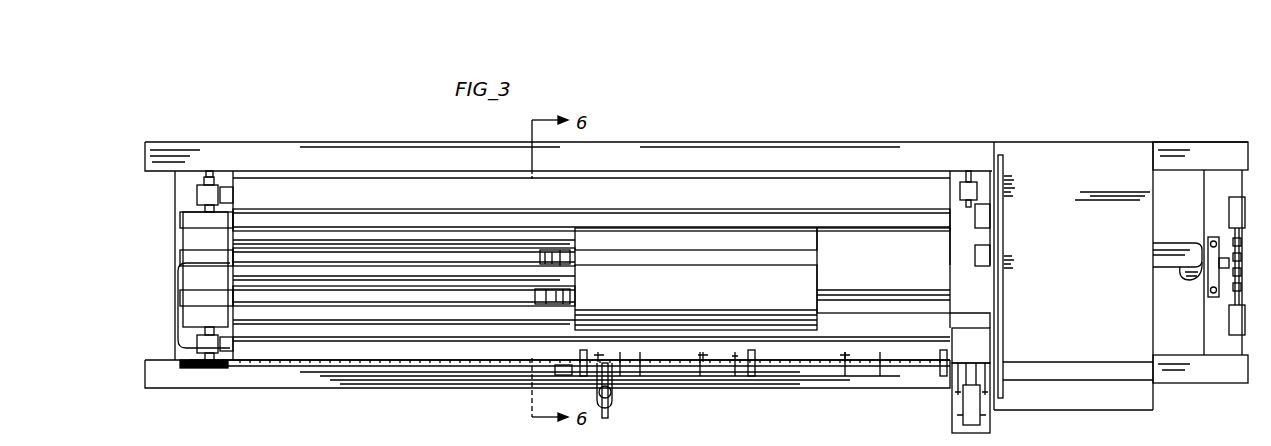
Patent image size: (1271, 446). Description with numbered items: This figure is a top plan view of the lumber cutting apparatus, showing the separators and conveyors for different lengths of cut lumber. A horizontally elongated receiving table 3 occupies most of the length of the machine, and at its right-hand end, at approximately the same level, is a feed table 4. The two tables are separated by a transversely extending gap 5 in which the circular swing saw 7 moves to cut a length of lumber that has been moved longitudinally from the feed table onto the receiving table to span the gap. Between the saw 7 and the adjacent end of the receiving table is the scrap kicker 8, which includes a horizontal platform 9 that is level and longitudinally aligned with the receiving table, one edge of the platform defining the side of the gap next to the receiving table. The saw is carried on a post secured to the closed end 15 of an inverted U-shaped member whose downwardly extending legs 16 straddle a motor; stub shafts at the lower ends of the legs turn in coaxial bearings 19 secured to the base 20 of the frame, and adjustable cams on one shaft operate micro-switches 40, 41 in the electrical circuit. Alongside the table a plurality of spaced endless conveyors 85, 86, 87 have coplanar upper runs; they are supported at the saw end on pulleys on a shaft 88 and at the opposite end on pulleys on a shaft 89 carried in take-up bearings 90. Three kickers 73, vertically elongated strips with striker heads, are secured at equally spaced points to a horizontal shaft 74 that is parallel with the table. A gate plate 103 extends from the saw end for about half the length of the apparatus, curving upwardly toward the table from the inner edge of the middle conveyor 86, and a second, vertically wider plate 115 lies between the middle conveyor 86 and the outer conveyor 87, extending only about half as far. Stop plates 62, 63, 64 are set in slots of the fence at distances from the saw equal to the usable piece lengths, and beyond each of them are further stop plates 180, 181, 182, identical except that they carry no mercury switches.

The receiving table 3 is at (450, 358).
The feed table 4 is at (1062, 258).
The gap 5 is at (1003, 315).
The circular swing saw 7 is at (1002, 155).
The scrap kicker 8 is at (940, 406).
The horizontal platform 9 is at (975, 346).
The closed end 15 is at (1184, 228).
The legs 16 is at (1190, 272).
The bearings 19 is at (1212, 280).
The base 20 is at (1185, 142).
The micro-switch 40 is at (1232, 318).
The micro-switch 41 is at (1232, 205).
The stop plate 62 is at (868, 362).
The stop plate 63 is at (735, 360).
The stop plate 64 is at (640, 362).
The kicker 73 is at (583, 357).
The horizontal shaft 74 is at (823, 362).
The endless conveyor 85 is at (190, 300).
The middle conveyor 86 is at (190, 258).
The outer conveyor 87 is at (190, 220).
The shaft 88 is at (968, 181).
The shaft 89 is at (210, 185).
The take-up bearings 90 is at (200, 197).
The gate plate 103 is at (656, 302).
The arcuately upwardly extending plate 115 is at (892, 258).
The stop plate 180 is at (845, 357).
The stop plate 181 is at (700, 356).
The stop plate 182 is at (600, 352).